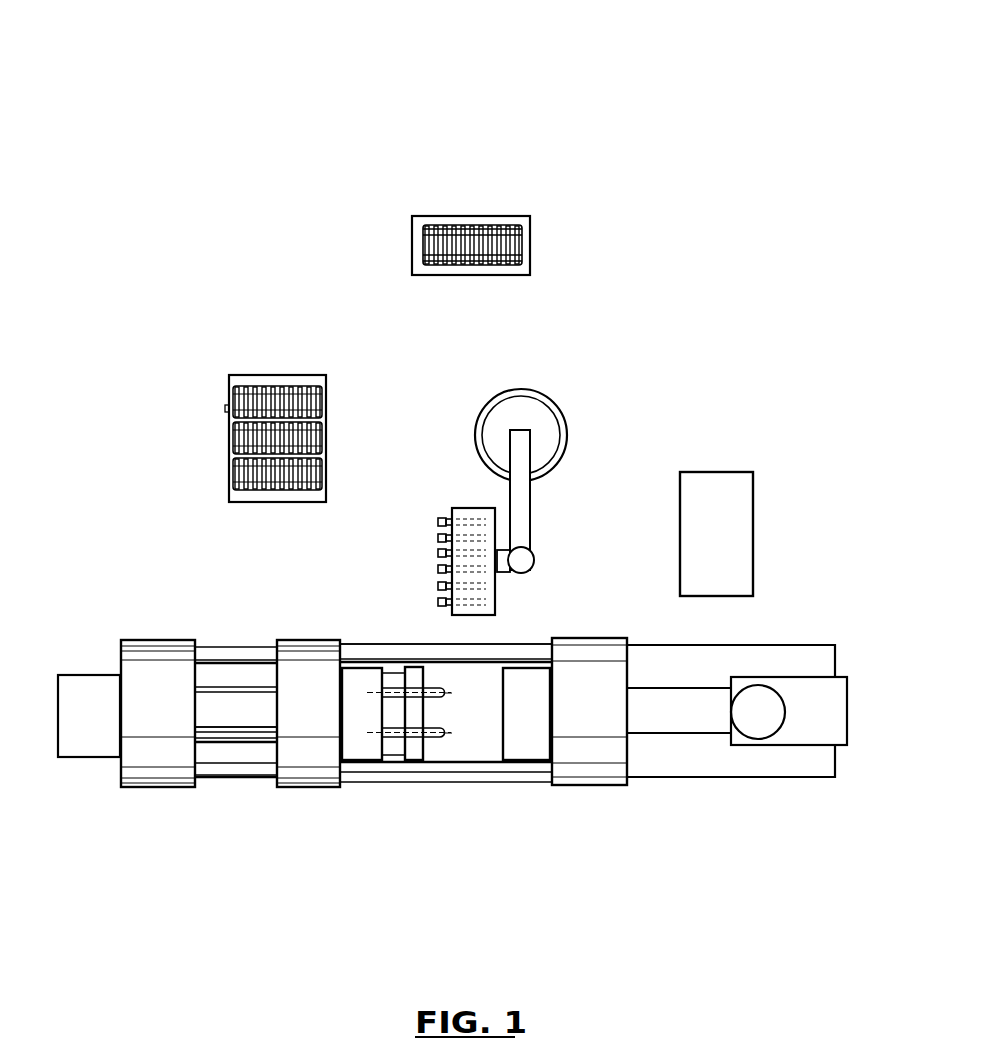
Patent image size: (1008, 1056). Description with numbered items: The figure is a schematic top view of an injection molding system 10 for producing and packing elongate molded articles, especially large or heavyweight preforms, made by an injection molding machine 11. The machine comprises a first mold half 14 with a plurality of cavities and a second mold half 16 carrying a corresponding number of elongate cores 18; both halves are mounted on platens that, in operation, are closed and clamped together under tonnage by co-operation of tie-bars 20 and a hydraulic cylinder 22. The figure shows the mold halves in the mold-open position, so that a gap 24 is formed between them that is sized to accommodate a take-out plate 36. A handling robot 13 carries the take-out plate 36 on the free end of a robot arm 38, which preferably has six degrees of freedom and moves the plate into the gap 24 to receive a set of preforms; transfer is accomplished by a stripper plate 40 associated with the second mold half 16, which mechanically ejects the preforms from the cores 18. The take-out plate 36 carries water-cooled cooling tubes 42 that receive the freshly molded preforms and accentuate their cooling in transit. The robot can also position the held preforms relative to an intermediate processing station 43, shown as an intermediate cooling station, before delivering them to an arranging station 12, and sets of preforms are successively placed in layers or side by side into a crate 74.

The injection molding system 10 is at (748, 88).
The injection molding machine 11 is at (718, 820).
The arranging station 12 is at (496, 216).
The handling robot 13 is at (583, 399).
The first mold half 14 is at (520, 750).
The second mold half 16 is at (357, 750).
The elongate cores 18 is at (447, 738).
The tie-bars 20 is at (372, 656).
The hydraulic cylinder 22 is at (237, 714).
The gap 24 is at (490, 724).
The take-out plate 36 is at (491, 593).
The robot arm 38 is at (524, 508).
The stripper plate 40 is at (416, 750).
The cooling tubes 42 is at (465, 537).
The intermediate processing station 43 is at (745, 523).
The crate 74 is at (250, 375).